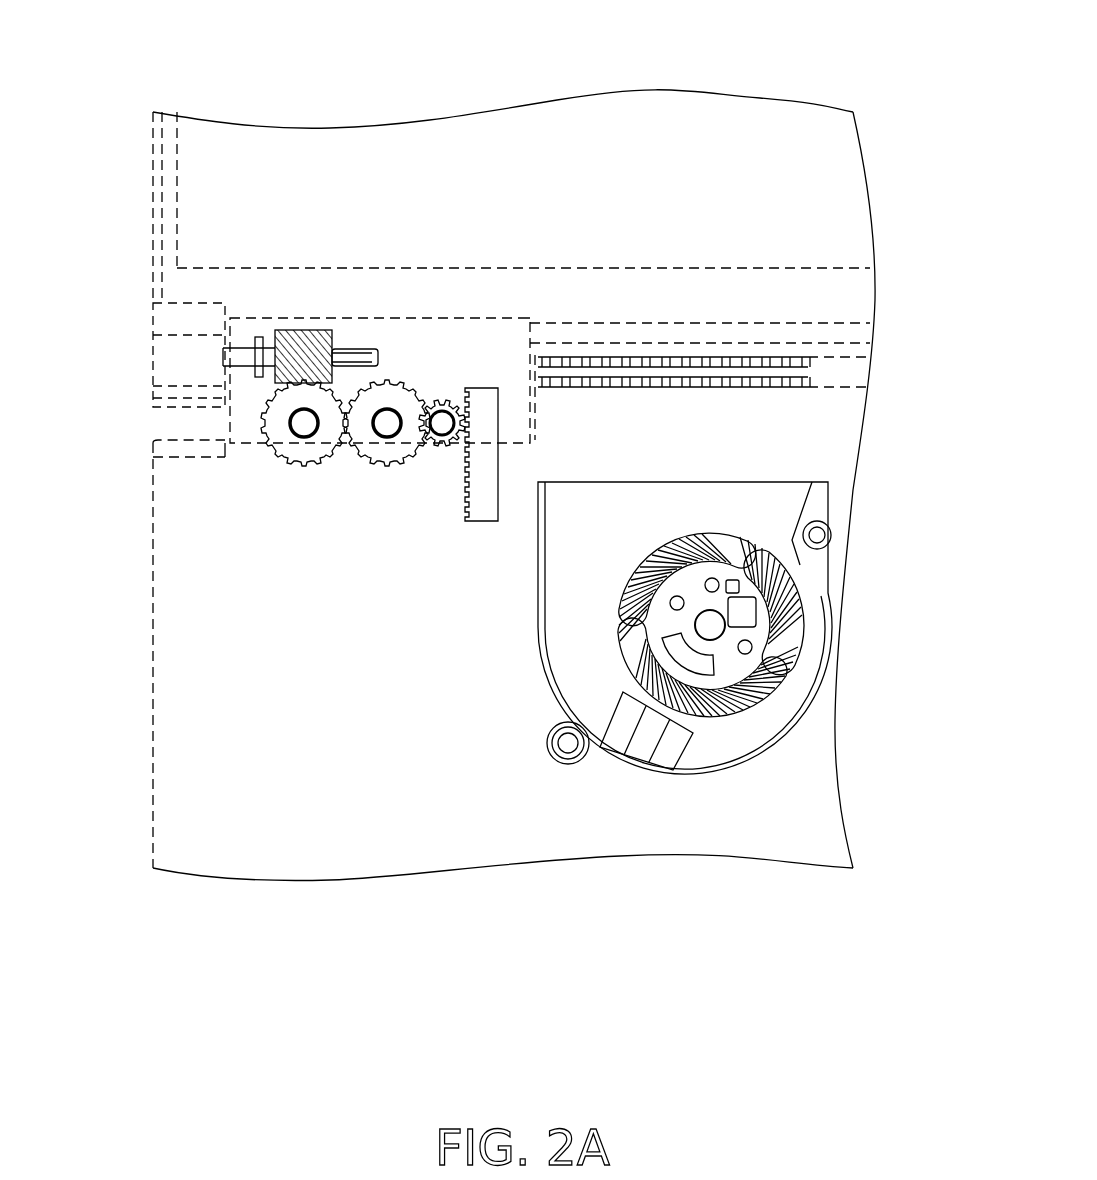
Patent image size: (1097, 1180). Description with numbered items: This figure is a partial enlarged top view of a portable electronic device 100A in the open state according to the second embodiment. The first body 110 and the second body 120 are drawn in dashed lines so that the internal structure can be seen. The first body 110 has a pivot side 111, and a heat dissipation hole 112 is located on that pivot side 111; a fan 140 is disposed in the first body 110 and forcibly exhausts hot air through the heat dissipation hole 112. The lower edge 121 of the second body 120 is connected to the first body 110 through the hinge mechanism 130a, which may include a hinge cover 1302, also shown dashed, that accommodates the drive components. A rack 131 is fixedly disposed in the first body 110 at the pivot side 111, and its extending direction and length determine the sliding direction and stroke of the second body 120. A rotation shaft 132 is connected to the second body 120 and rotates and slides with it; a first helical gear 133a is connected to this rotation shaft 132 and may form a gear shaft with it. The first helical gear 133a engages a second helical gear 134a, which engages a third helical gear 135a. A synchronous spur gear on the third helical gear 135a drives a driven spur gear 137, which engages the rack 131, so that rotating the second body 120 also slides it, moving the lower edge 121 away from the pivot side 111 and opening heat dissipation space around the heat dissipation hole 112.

The portable electronic device 100A is at (953, 1037).
The first body 110 is at (848, 438).
The pivot side 111 is at (850, 373).
The heat dissipation hole 112 is at (570, 353).
The second body 120 is at (847, 148).
The lower edge 121 is at (152, 313).
The hinge mechanism 130a is at (428, 348).
The hinge cover 1302 is at (503, 317).
The rack 131 is at (476, 505).
The rotation shaft 132 is at (247, 353).
The first helical gear 133a is at (297, 343).
The second helical gear 134a is at (277, 422).
The third helical gear 135a is at (387, 448).
The driven spur gear 137 is at (443, 407).
The fan 140 is at (646, 818).